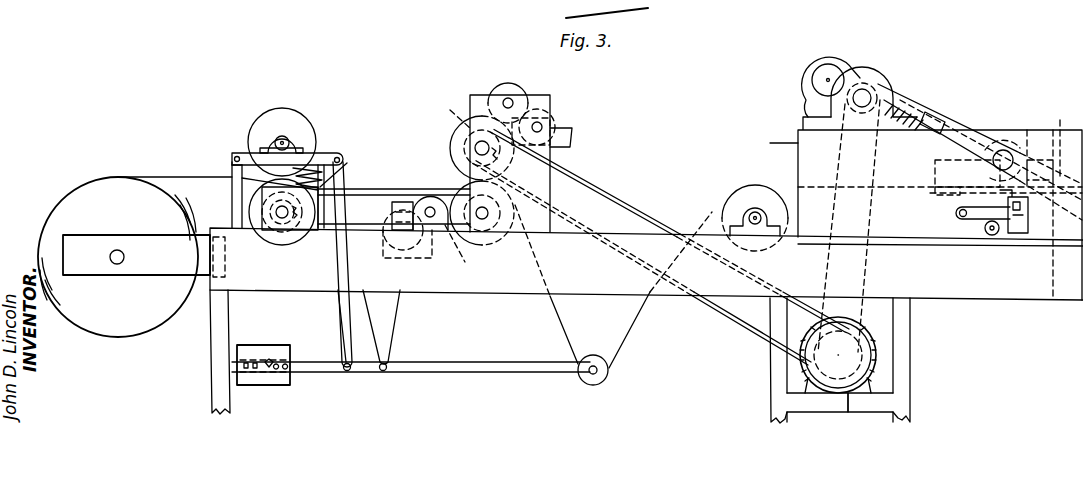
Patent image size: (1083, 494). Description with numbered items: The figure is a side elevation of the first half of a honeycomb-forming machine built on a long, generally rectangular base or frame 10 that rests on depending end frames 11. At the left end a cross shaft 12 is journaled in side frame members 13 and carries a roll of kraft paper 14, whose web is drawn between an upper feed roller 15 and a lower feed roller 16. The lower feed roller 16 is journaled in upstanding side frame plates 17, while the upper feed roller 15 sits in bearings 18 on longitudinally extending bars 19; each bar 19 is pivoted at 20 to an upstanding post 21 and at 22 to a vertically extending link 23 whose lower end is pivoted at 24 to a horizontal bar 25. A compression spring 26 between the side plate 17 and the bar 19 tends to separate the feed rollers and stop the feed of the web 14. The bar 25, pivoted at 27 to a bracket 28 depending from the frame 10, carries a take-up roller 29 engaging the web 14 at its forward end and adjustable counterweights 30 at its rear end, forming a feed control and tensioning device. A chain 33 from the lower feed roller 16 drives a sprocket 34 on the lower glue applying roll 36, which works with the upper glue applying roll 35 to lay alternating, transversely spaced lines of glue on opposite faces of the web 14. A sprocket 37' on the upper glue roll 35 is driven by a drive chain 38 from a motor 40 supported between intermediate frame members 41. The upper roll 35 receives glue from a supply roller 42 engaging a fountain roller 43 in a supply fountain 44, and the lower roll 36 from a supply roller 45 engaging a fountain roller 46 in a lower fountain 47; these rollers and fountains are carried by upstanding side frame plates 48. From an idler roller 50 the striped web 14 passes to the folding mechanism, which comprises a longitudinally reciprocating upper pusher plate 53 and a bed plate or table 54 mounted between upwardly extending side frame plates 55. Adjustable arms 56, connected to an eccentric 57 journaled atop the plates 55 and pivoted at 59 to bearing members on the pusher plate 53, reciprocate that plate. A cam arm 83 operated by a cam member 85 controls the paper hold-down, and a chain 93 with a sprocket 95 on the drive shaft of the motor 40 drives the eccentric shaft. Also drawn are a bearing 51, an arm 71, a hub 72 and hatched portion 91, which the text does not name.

The base or frame 10 is at (668, 305).
The end frames 11 is at (212, 326).
The cross shaft 12 is at (118, 250).
The side frame members 13 is at (152, 268).
The web of kraft paper 14 is at (160, 177).
The upper feed roller 15 is at (280, 110).
The lower feed roller 16 is at (306, 218).
The side frame plates 17 is at (347, 170).
The bearings 18 is at (275, 140).
The longitudinally extending bars 19 is at (328, 153).
The pivot 20 is at (235, 160).
The post 21 is at (232, 180).
The pivot 22 is at (345, 158).
The vertically extending link 23 is at (343, 322).
The lower end pivot 24 is at (347, 372).
The horizontally extending bar 25 is at (472, 373).
The compression spring 26 is at (312, 165).
The pivot 27 is at (384, 372).
The bracket 28 is at (393, 336).
The take-up roller 29 is at (595, 386).
The adjustable counterweights 30 is at (276, 385).
The chain 33 is at (378, 188).
The sprocket 34 is at (506, 243).
The upper glue applying roll 35 is at (452, 146).
The lower glue applying roll 36 is at (482, 246).
The sprocket 37' is at (449, 106).
The drive chain 38 is at (628, 212).
The motor 40 is at (858, 412).
The intermediate frame members 41 is at (770, 376).
The supply roller 42 is at (502, 93).
The fountain roller 43 is at (552, 112).
The supply fountain 44 is at (572, 128).
The supply roller 45 is at (440, 236).
The fountain roller 46 is at (392, 218).
The lower fountain 47 is at (393, 252).
The side frame plates 48 is at (540, 175).
The idler roller 50 is at (738, 198).
The bearing 51 is at (728, 224).
The upper pusher plate 53 is at (1058, 140).
The bed plate or table 54 is at (950, 205).
The side frame plates 55 is at (798, 136).
The adjustable arms 56 is at (932, 112).
The eccentric 57 is at (815, 72).
The pivot 59 is at (1006, 148).
The arm 71 is at (905, 100).
The hub 72 is at (870, 85).
The cam arm 83 is at (982, 225).
The cam member 85 is at (995, 236).
The hatched portion 91 is at (904, 91).
The chain 93 is at (870, 318).
The sprocket 95 is at (862, 358).